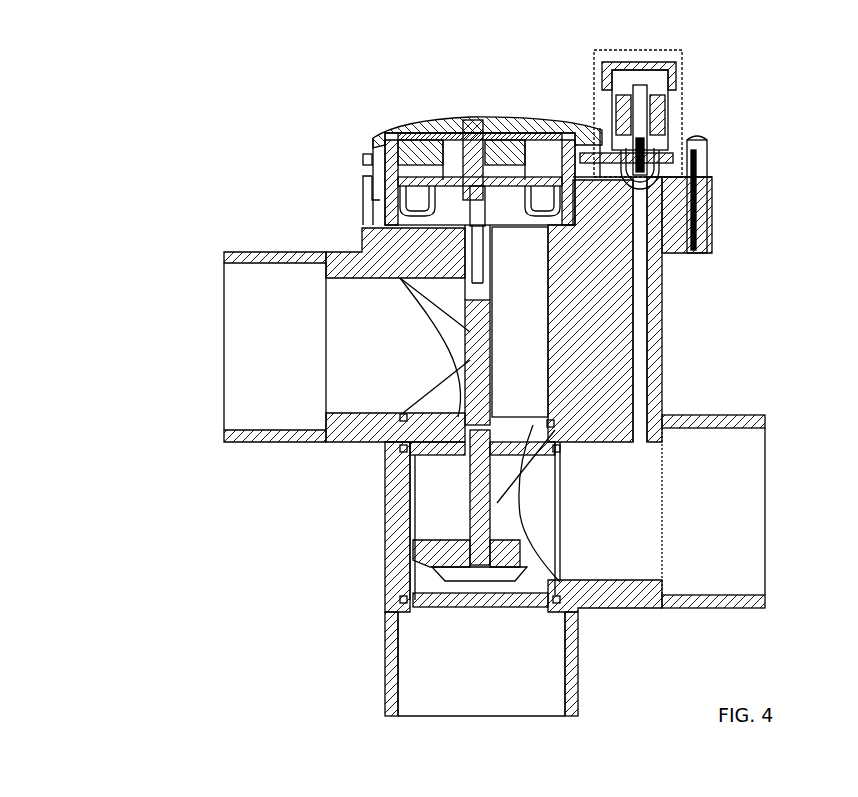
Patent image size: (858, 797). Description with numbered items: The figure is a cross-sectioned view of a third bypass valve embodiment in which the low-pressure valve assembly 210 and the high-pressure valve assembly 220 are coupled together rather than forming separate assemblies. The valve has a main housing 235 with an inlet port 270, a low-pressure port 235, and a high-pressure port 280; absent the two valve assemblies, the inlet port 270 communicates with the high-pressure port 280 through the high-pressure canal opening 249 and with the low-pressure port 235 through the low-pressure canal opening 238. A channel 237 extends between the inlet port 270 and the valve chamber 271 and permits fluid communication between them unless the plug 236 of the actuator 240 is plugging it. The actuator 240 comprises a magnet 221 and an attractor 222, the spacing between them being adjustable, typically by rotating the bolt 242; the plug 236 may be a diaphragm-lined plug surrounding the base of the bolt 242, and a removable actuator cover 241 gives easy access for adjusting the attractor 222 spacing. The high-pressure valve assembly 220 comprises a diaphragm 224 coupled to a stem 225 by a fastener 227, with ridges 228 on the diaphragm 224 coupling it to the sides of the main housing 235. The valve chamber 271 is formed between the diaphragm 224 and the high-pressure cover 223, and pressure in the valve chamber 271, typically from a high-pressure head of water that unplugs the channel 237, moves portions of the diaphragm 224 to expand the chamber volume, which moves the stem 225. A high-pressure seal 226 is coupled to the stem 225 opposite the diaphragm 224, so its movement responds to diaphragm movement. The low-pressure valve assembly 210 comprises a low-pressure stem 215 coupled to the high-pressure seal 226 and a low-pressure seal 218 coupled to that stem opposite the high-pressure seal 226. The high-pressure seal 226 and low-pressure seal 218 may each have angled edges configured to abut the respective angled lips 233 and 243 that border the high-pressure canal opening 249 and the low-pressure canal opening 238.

The low-pressure valve assembly 210 is at (380, 476).
The low-pressure stem 215 is at (413, 552).
The low-pressure seal 218 is at (470, 490).
The high-pressure valve assembly 220 is at (392, 108).
The magnet 221 is at (672, 120).
The attractor 222 is at (665, 100).
The high-pressure cover 223 is at (434, 112).
The diaphragm 224 is at (365, 216).
The stem 225 is at (462, 318).
The high-pressure seal 226 is at (552, 418).
The fastener 227 is at (437, 167).
The ridges 228 is at (365, 186).
The angled lip 233 is at (403, 413).
The main housing 235 is at (762, 413).
The plug 236 is at (645, 178).
The channel 237 is at (637, 297).
The low-pressure canal opening 238 is at (482, 600).
The actuator 240 is at (592, 90).
The actuator cover 241 is at (667, 62).
The bolt 242 is at (640, 92).
The angled lip 243 is at (433, 597).
The high-pressure canal opening 249 is at (458, 417).
The inlet port 270 is at (745, 480).
The valve chamber 271 is at (553, 152).
The high-pressure port 280 is at (248, 290).